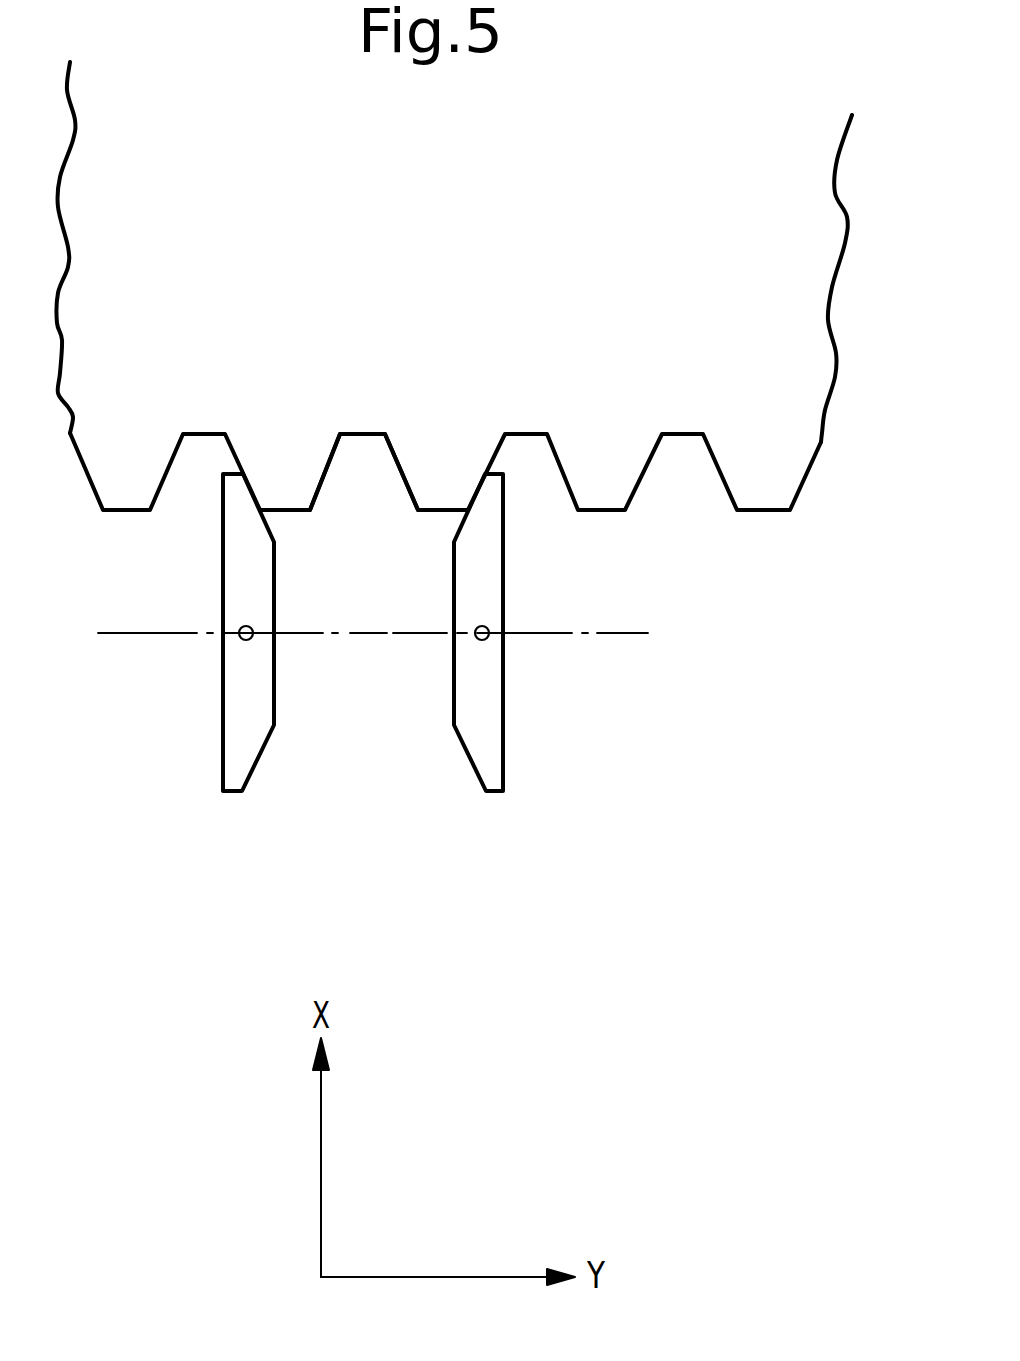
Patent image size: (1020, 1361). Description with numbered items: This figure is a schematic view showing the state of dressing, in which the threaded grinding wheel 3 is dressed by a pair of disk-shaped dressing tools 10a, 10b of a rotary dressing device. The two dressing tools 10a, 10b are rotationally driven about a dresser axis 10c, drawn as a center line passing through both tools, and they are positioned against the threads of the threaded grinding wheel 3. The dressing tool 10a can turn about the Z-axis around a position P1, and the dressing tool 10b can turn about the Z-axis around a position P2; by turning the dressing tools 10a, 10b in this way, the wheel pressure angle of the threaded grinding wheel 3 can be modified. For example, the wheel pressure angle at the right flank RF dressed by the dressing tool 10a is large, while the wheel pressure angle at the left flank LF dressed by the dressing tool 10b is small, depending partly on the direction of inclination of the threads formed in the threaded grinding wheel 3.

The threaded grinding wheel 3 is at (722, 363).
The dressing tool 10a is at (232, 780).
The dressing tool 10b is at (492, 778).
The dresser axis 10c is at (434, 634).
The position P1 is at (247, 641).
The position P2 is at (482, 641).
The left flank LF is at (328, 477).
The right flank RF is at (403, 477).